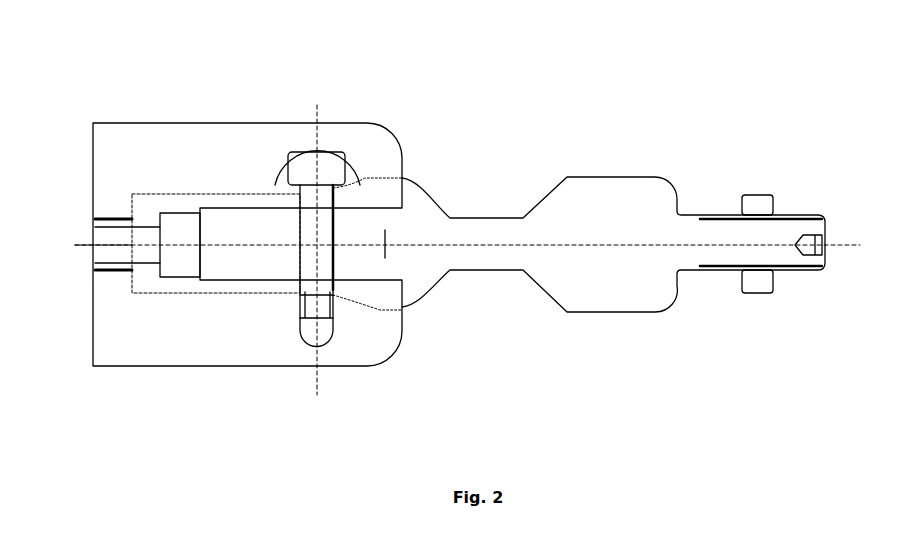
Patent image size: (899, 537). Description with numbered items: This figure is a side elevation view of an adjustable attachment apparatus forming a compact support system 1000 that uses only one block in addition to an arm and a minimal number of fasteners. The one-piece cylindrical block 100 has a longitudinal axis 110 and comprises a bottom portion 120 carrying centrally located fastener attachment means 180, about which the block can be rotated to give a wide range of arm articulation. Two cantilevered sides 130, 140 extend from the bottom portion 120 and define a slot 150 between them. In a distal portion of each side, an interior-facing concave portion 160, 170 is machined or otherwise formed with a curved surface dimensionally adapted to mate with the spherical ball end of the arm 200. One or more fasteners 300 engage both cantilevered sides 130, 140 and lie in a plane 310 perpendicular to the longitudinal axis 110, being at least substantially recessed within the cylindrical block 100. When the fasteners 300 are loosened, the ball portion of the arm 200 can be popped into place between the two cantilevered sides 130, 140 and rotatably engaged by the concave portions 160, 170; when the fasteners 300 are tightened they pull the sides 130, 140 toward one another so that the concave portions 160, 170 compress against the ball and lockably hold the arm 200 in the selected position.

The support system 1000 is at (500, 82).
The cylindrical block 100 is at (202, 112).
The longitudinal axis 110 is at (85, 243).
The bottom portion 120 is at (92, 318).
The cantilevered side 130 is at (378, 153).
The cantilevered side 140 is at (377, 338).
The slot 150 is at (257, 281).
The concave portion 160 is at (380, 176).
The concave portion 170 is at (378, 310).
The fastener attachment means 180 is at (112, 267).
The arm 200 is at (615, 157).
The fastener 300 is at (305, 162).
The plane 310 is at (317, 112).